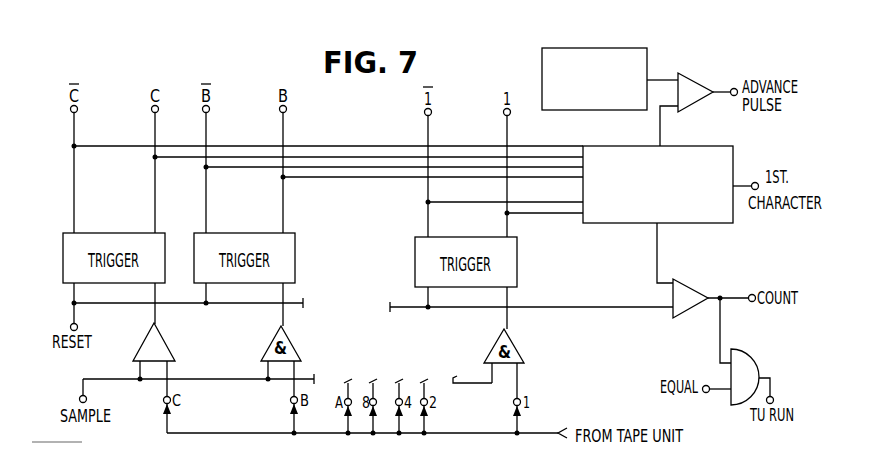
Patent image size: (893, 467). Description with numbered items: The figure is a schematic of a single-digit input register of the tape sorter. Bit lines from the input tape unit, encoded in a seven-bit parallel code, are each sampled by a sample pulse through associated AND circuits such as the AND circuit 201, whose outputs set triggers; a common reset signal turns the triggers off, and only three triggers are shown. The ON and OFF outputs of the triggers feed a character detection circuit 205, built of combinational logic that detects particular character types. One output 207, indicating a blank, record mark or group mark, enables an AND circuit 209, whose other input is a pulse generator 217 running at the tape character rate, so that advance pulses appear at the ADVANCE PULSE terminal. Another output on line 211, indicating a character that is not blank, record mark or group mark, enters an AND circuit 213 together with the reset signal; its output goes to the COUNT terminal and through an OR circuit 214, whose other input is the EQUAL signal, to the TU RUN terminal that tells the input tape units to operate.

The AND circuit 201 is at (166, 343).
The character detection circuit 205 is at (618, 226).
The output line 207 is at (657, 127).
The AND circuit 209 is at (698, 74).
The line 211 is at (658, 260).
The AND circuit 213 is at (697, 306).
The OR circuit 214 is at (751, 356).
The pulse generator 217 is at (600, 48).